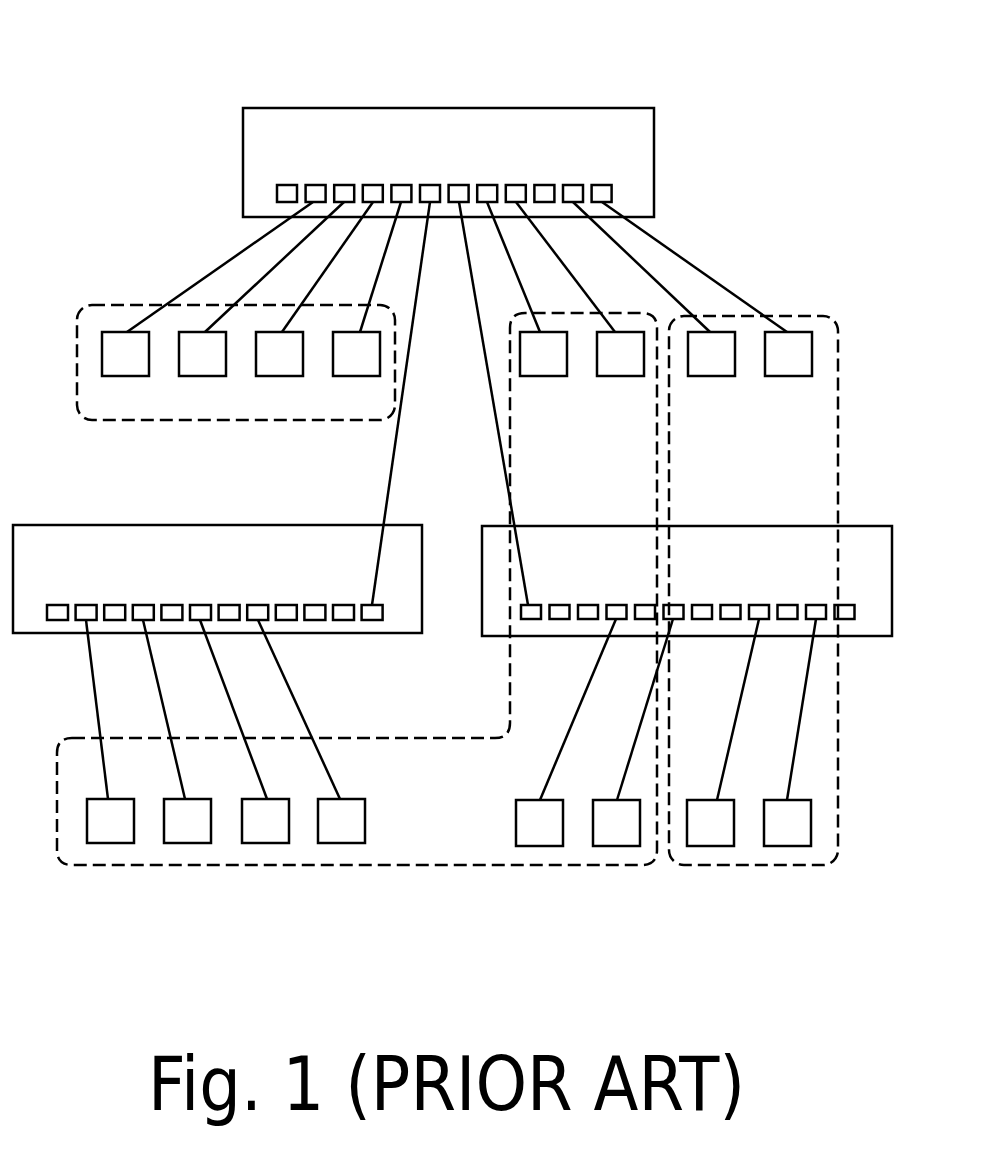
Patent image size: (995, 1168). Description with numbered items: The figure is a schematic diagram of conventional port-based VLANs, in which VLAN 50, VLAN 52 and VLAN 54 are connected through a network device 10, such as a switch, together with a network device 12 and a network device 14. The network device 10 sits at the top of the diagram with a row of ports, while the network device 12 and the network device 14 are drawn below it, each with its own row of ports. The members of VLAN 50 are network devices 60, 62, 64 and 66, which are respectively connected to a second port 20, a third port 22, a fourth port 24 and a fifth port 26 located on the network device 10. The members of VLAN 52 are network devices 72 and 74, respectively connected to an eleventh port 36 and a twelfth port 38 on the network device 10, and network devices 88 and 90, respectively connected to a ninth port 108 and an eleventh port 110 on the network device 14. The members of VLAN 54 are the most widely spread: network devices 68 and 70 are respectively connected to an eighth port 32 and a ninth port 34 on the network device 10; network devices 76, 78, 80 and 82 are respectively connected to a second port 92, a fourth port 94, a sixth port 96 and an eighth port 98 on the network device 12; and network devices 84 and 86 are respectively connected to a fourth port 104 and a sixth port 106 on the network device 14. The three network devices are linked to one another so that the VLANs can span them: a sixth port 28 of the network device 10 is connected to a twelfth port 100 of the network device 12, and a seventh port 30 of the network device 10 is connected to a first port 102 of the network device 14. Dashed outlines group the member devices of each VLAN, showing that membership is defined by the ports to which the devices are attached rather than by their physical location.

The network device 10 is at (640, 170).
The network device 12 is at (402, 617).
The network device 14 is at (502, 618).
The second port 20 is at (316, 185).
The third port 22 is at (344, 185).
The fourth port 24 is at (373, 185).
The fifth port 26 is at (401, 185).
The sixth port 28 is at (430, 185).
The seventh port 30 is at (459, 185).
The eighth port 32 is at (487, 185).
The ninth port 34 is at (516, 185).
The eleventh port 36 is at (573, 185).
The twelfth port 38 is at (602, 185).
The VLAN 50 is at (245, 398).
The VLAN 52 is at (747, 833).
The VLAN 54 is at (447, 837).
The network device 60 is at (125, 365).
The network device 62 is at (203, 365).
The network device 64 is at (280, 365).
The network device 66 is at (355, 365).
The network device 68 is at (545, 365).
The network device 70 is at (617, 367).
The network device 72 is at (713, 367).
The network device 74 is at (791, 367).
The network device 76 is at (117, 826).
The network device 78 is at (192, 826).
The network device 80 is at (262, 826).
The network device 82 is at (342, 826).
The network device 84 is at (540, 830).
The network device 86 is at (612, 830).
The network device 88 is at (708, 832).
The network device 90 is at (788, 832).
The second port 92 is at (86, 605).
The fourth port 94 is at (143, 605).
The sixth port 96 is at (200, 605).
The eighth port 98 is at (257, 605).
The twelfth port 100 is at (369, 605).
The first port 102 is at (541, 604).
The fourth port 104 is at (617, 604).
The sixth port 106 is at (675, 604).
The ninth port 108 is at (757, 604).
The eleventh port 110 is at (818, 604).